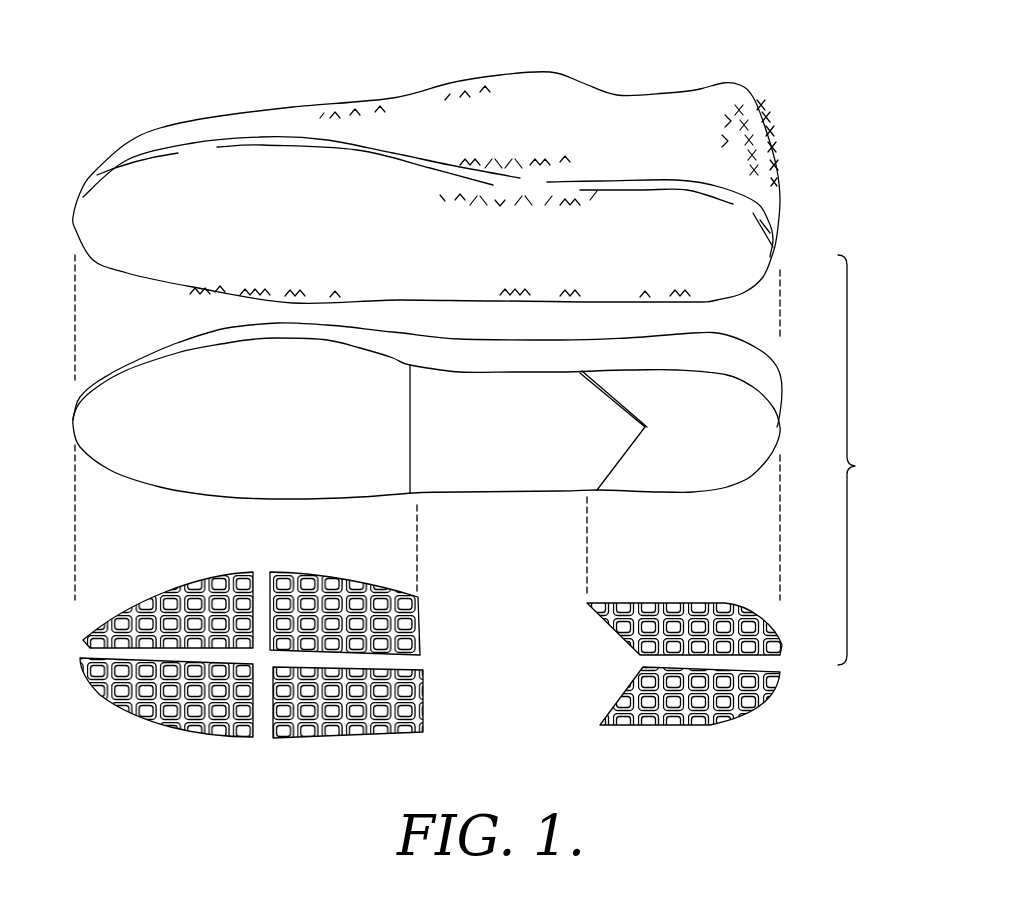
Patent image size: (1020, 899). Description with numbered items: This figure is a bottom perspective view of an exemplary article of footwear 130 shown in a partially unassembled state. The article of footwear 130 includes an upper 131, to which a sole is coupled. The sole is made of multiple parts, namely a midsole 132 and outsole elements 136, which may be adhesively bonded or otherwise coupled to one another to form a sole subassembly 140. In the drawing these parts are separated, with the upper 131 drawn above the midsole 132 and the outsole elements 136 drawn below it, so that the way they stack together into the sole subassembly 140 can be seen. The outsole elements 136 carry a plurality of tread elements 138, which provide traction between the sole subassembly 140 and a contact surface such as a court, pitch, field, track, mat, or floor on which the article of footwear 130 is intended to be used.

The article of footwear 130 is at (683, 62).
The upper 131 is at (762, 136).
The midsole 132 is at (88, 418).
The outsole elements 136 is at (142, 735).
The tread elements 138 is at (694, 723).
The sole subassembly 140 is at (873, 460).